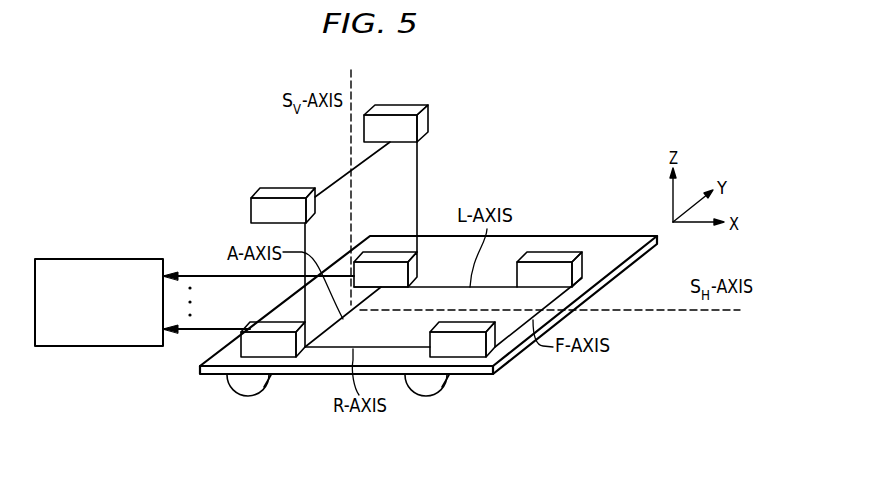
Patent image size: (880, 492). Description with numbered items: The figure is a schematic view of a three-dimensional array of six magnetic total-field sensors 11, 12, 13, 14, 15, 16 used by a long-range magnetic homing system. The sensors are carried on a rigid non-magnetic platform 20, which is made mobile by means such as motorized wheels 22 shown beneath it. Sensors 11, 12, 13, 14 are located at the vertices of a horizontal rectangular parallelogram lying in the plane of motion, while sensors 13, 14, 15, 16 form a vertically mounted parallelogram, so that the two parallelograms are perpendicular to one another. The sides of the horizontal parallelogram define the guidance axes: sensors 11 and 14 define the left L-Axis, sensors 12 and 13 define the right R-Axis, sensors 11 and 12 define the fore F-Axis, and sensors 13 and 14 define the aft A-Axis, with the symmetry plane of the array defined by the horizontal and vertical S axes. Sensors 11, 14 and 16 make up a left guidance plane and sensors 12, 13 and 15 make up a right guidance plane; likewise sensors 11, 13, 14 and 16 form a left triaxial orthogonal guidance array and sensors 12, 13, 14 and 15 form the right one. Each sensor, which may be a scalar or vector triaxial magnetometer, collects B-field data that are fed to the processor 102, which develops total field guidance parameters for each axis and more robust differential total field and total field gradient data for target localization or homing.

The processor 102 is at (95, 259).
The magnetic total-field sensor 11 is at (581, 270).
The magnetic total-field sensor 12 is at (493, 344).
The magnetic total-field sensor 13 is at (252, 327).
The magnetic total-field sensor 14 is at (386, 252).
The magnetic total-field sensor 15 is at (281, 188).
The magnetic total-field sensor 16 is at (395, 104).
The platform 20 is at (201, 375).
The wheels 22 is at (240, 395).